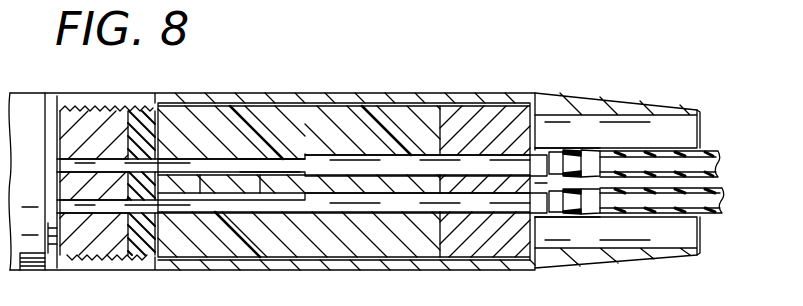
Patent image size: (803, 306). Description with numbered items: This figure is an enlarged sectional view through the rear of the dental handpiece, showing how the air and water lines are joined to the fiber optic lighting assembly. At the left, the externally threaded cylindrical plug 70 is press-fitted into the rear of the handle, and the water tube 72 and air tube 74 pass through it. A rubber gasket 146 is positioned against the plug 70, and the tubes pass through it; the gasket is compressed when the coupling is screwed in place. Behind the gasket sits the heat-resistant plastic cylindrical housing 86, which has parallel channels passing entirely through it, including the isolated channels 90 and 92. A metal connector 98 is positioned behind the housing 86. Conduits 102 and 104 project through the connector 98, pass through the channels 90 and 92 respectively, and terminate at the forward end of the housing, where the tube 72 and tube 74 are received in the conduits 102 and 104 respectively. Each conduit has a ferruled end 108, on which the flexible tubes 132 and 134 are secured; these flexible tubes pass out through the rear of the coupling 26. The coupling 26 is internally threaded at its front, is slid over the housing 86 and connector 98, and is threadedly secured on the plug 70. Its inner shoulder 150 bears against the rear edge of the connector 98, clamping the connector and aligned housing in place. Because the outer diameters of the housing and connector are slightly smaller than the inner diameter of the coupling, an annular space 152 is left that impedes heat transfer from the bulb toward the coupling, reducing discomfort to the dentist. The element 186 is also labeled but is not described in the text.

The coupling 26 is at (497, 93).
The cylindrical plug 70 is at (115, 113).
The tube 72 is at (84, 203).
The tube 74 is at (63, 108).
The cylindrical housing 86 is at (308, 103).
The channel 90 is at (231, 200).
The channel 92 is at (260, 165).
The connector 98 is at (470, 240).
The conduit 102 is at (358, 203).
The conduit 104 is at (404, 165).
The ferruled end 108 is at (592, 160).
The flexible tube 132 is at (705, 215).
The flexible tube 134 is at (704, 153).
The rubber gasket 146 is at (143, 247).
The inner shoulder 150 is at (525, 92).
The annular space 152 is at (263, 100).
The connector 186 is at (733, 305).